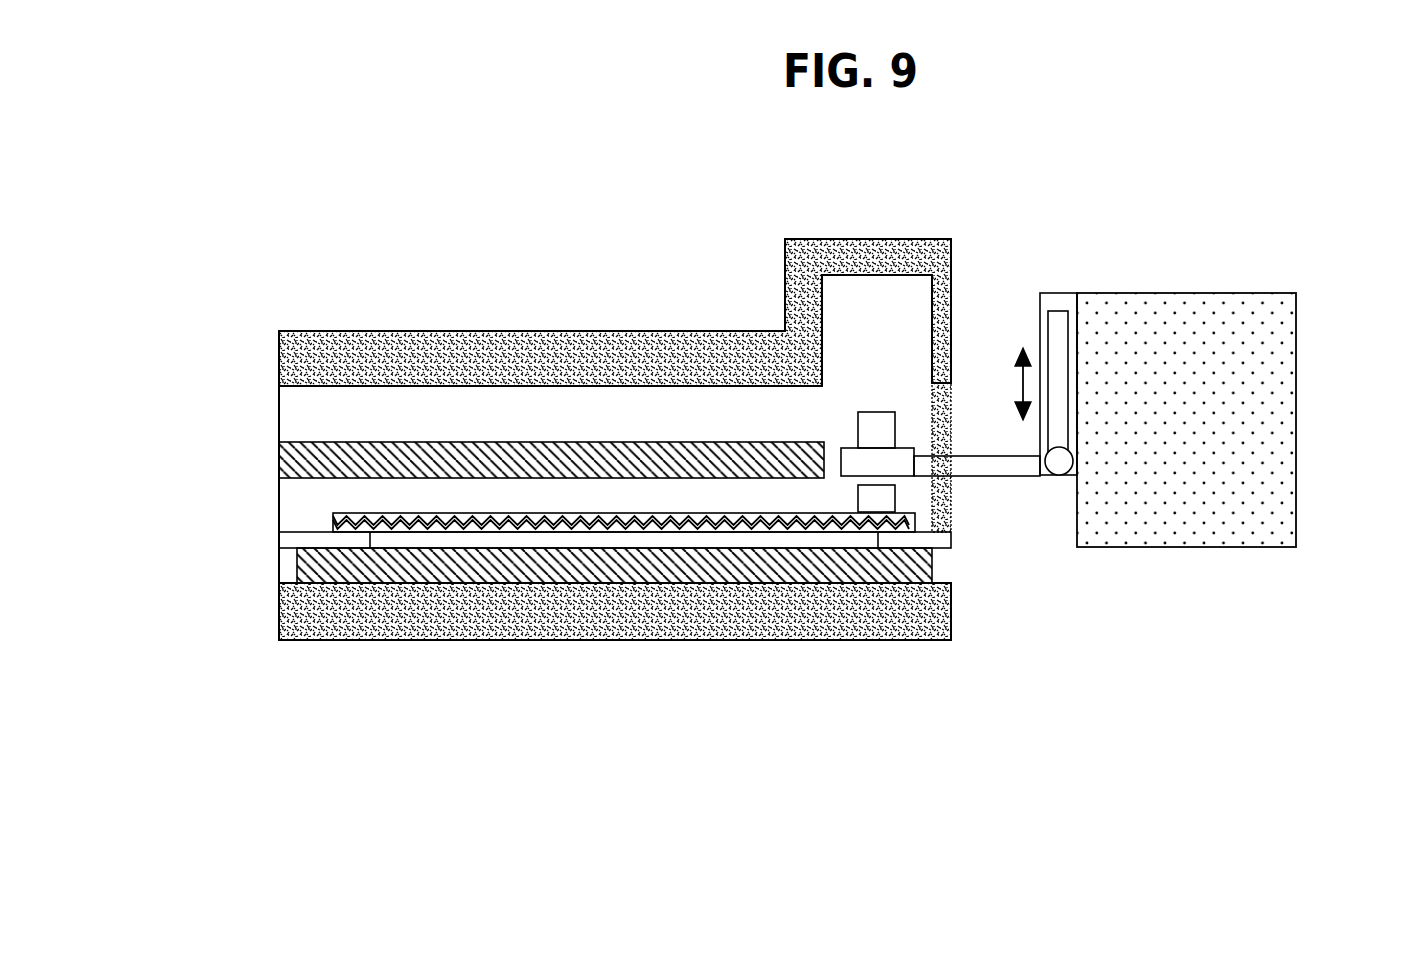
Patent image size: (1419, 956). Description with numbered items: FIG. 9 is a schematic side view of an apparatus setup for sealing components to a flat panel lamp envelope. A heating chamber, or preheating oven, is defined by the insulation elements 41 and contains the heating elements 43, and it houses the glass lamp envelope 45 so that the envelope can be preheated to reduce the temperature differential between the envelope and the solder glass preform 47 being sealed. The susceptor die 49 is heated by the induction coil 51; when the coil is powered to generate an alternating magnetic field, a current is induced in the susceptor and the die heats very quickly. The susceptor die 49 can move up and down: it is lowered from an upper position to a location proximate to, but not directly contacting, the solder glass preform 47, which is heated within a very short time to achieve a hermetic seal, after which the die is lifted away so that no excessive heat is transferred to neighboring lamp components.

The insulation elements 41 is at (932, 257).
The heating elements 43 is at (297, 458).
The lamp envelope 45 is at (333, 517).
The solder glass preform 47 is at (878, 493).
The susceptor die 49 is at (887, 438).
The induction coil 51 is at (1260, 437).